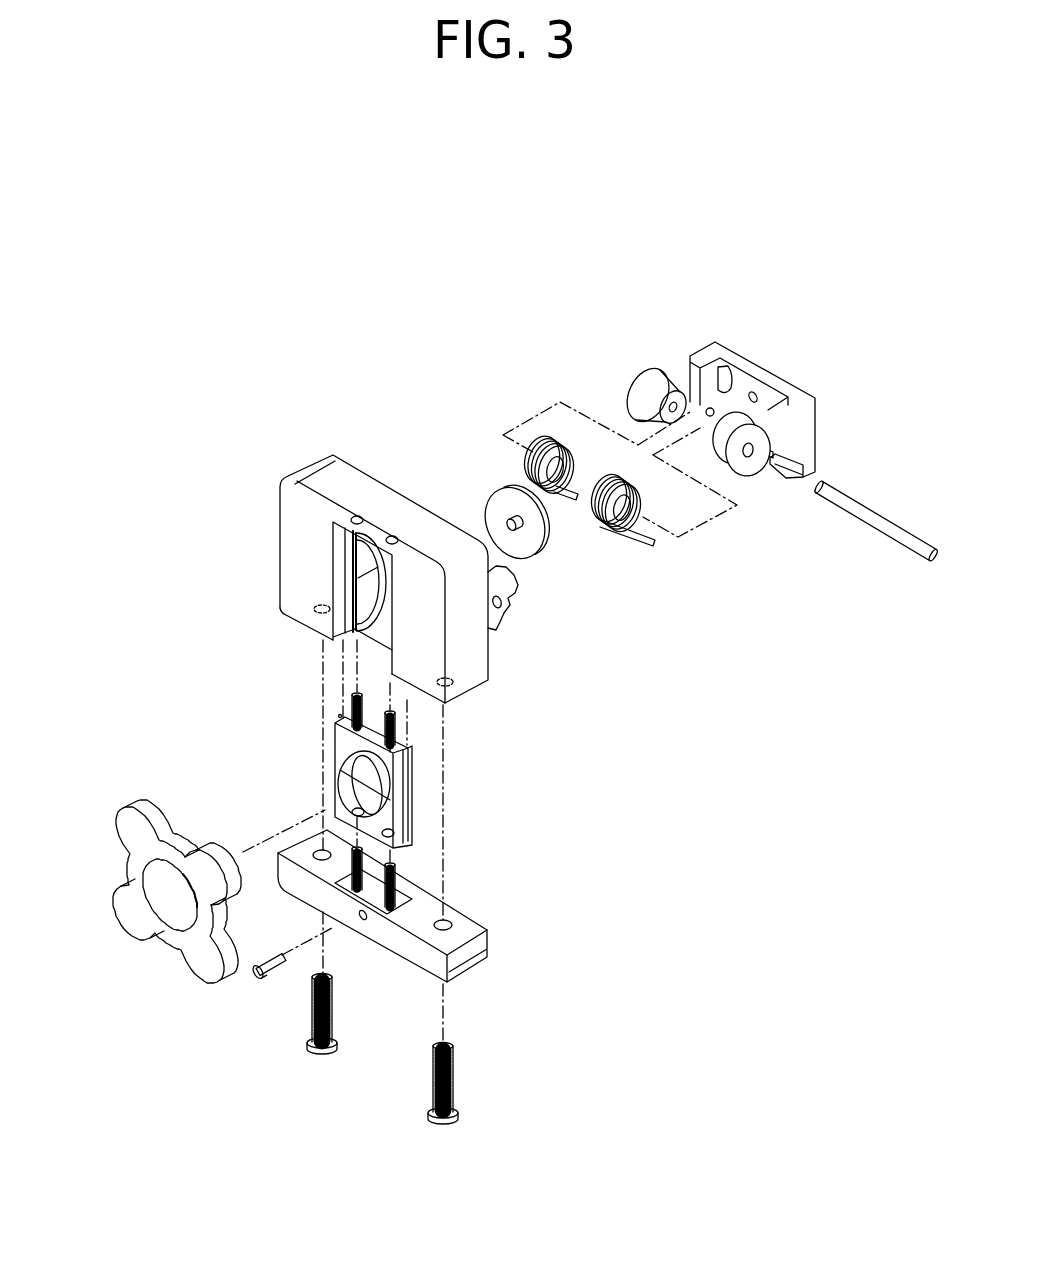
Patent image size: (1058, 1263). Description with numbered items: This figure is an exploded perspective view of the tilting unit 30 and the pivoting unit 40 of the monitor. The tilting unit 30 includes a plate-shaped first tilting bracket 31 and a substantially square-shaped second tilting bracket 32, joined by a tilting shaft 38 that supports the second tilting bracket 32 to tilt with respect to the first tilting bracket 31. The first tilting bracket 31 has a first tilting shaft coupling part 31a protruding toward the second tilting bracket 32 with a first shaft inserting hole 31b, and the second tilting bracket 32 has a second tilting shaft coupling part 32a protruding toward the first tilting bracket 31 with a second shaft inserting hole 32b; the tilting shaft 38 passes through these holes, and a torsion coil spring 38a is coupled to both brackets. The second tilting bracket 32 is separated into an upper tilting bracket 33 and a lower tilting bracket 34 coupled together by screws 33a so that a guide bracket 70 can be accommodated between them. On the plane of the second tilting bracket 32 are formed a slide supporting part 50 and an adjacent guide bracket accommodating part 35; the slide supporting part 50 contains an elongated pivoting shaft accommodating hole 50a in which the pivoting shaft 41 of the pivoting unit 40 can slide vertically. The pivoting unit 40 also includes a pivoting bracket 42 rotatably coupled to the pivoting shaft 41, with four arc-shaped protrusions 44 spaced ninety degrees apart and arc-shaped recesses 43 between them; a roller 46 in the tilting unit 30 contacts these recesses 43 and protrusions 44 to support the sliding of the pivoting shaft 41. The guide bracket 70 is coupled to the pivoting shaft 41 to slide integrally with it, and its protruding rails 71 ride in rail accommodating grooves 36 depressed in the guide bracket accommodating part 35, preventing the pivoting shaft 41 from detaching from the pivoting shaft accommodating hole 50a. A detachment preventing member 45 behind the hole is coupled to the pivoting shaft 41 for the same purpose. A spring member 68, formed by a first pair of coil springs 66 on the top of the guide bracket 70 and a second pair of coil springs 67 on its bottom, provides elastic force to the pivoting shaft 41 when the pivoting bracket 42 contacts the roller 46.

The tilting unit 30 is at (368, 393).
The first tilting bracket 31 is at (735, 351).
The first tilting shaft coupling part 31a is at (760, 400).
The first shaft inserting hole 31b is at (752, 447).
The second tilting bracket 32 is at (212, 553).
The second tilting shaft coupling part 32a is at (508, 617).
The second shaft inserting hole 32b is at (508, 600).
The upper tilting bracket 33 is at (280, 553).
The screws 33a is at (455, 1078).
The lower tilting bracket 34 is at (280, 851).
The guide bracket accommodating part 35 is at (338, 523).
The rail accommodating grooves 36 is at (358, 542).
The tilting shaft 38 is at (881, 517).
The torsion coil spring 38a is at (616, 480).
The pivoting unit 40 is at (120, 937).
The pivoting shaft 41 is at (177, 923).
The pivoting bracket 42 is at (192, 937).
The recesses 43 is at (128, 870).
The protrusions 44 is at (120, 917).
The detachment preventing member 45 is at (500, 493).
The roller 46 is at (258, 984).
The slide supporting part 50 is at (383, 637).
The pivoting shaft accommodating hole 50a is at (383, 612).
The first pair of coil springs 66 is at (400, 723).
The second pair of coil springs 67 is at (393, 862).
The spring member 68 is at (500, 730).
The guide bracket 70 is at (335, 732).
The rails 71 is at (345, 787).